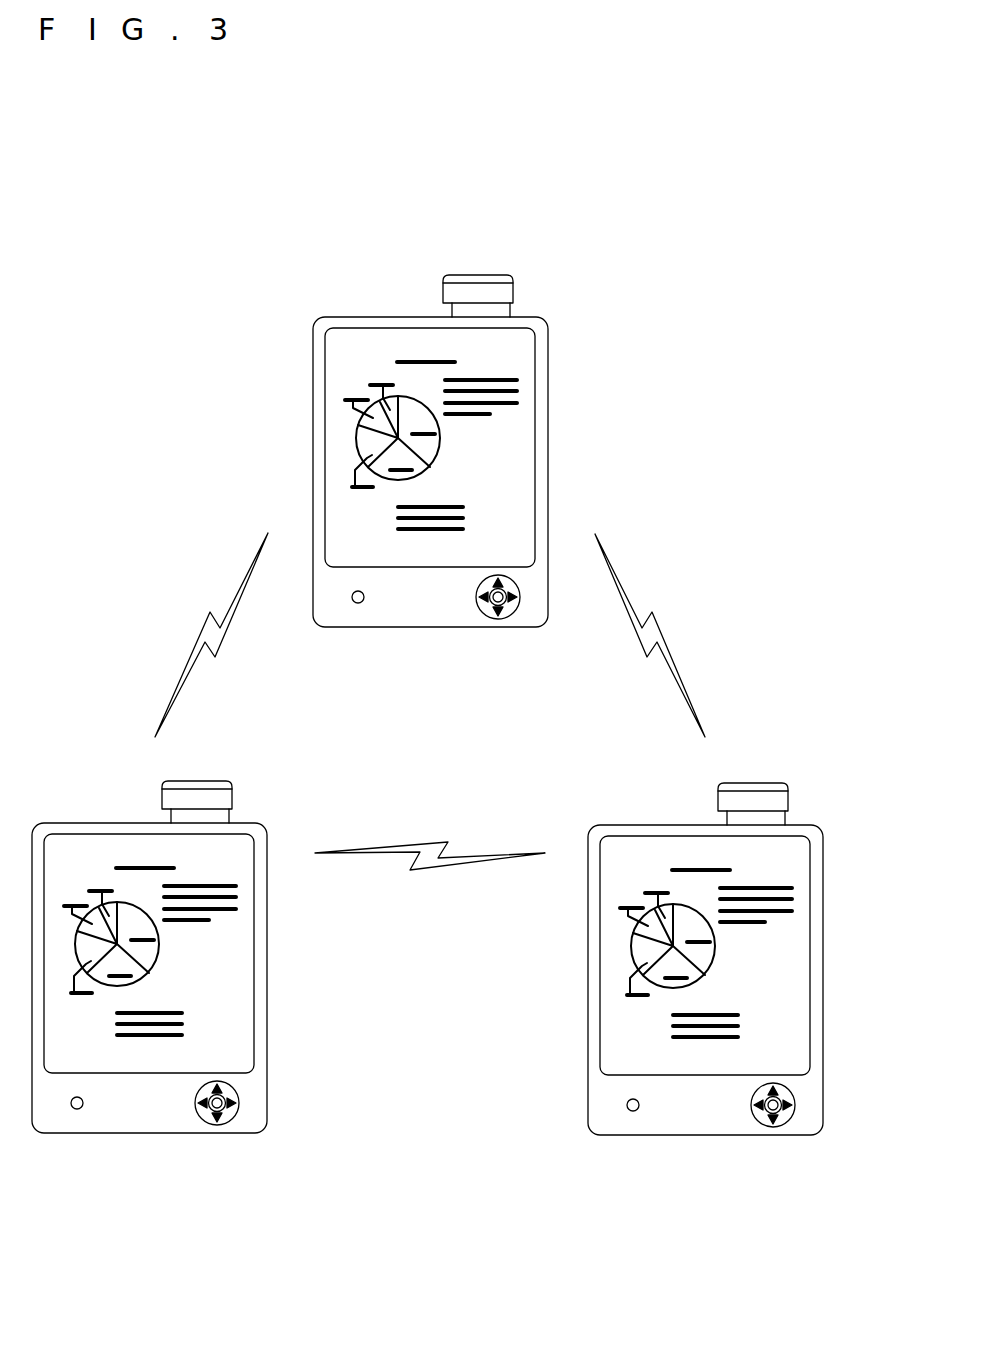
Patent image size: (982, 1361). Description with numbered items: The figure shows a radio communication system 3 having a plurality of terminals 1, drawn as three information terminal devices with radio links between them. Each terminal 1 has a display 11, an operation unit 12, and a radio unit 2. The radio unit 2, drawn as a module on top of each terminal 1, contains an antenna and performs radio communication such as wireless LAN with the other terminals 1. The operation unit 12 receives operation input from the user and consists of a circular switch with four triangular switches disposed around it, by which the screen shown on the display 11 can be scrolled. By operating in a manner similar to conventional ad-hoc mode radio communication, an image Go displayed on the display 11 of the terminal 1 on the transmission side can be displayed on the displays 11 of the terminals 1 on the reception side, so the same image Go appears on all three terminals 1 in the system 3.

The radio communication system 3 is at (140, 197).
The information terminal device 1 is at (433, 628).
The radio unit 2 is at (530, 296).
The display 11 is at (523, 462).
The operation unit 12 is at (518, 612).
The image Go is at (522, 354).